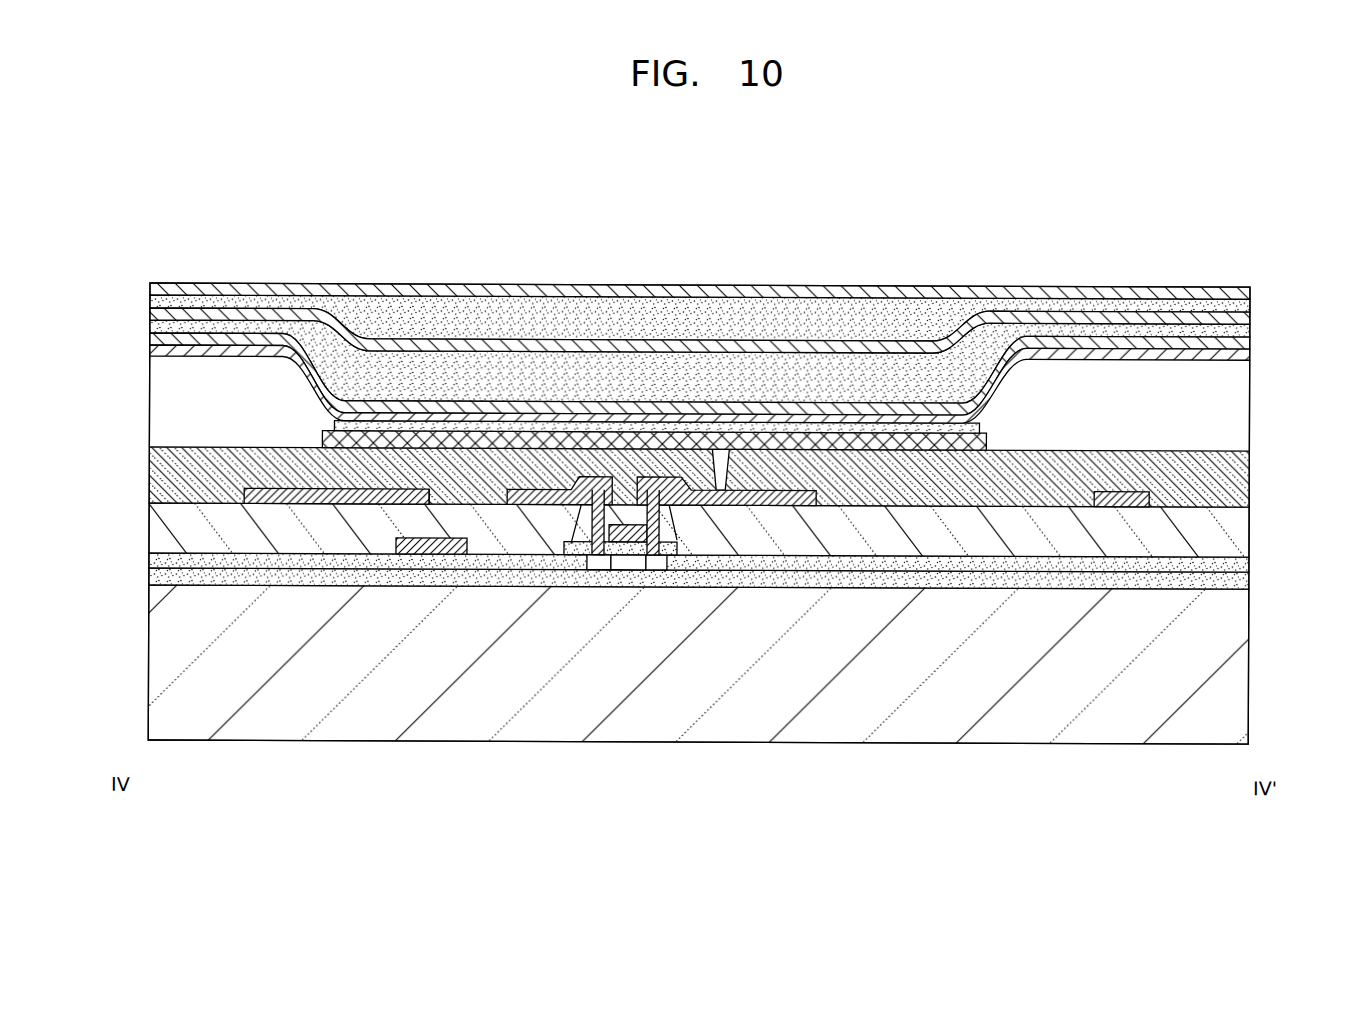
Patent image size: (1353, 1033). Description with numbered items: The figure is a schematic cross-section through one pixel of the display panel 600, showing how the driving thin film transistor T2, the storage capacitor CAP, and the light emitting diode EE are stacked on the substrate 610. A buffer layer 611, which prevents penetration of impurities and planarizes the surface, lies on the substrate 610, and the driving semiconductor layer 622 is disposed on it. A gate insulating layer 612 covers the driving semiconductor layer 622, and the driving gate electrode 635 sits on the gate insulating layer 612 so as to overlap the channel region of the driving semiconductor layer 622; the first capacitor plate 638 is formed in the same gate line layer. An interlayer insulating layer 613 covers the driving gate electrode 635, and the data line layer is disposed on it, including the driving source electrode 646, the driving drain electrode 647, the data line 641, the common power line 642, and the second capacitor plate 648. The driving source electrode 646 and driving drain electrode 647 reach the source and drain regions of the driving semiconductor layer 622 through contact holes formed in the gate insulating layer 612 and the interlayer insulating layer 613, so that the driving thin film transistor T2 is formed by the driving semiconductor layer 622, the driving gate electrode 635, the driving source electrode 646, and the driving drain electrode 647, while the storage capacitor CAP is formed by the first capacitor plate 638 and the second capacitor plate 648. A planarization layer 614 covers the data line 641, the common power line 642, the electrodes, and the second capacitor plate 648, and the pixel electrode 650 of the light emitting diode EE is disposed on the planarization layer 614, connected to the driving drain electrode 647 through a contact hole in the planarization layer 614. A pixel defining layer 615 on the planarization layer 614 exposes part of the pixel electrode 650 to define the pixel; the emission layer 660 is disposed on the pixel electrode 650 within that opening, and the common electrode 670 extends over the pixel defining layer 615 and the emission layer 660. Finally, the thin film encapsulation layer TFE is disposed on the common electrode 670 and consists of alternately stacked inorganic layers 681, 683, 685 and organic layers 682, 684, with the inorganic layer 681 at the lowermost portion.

The display panel 600 is at (1176, 247).
The substrate 610 is at (1250, 650).
The buffer layer 611 is at (984, 586).
The gate insulating layer 612 is at (877, 568).
The interlayer insulating layer 613 is at (1250, 528).
The planarization layer 614 is at (1250, 476).
The pixel defining layer 615 is at (150, 403).
The driving semiconductor layer 622 is at (628, 568).
The driving gate electrode 635 is at (663, 533).
The first capacitor plate 638 is at (415, 503).
The data line 641 is at (1120, 503).
The common power line 642 is at (275, 503).
The driving source electrode 646 is at (545, 503).
The driving drain electrode 647 is at (735, 503).
The second capacitor plate 648 is at (405, 553).
The pixel electrode 650 is at (430, 430).
The emission layer 660 is at (480, 420).
The common electrode 670 is at (537, 415).
The inorganic layer 681 is at (657, 403).
The organic layer 682 is at (712, 372).
The inorganic layer 683 is at (762, 345).
The organic layer 684 is at (818, 318).
The inorganic layer 685 is at (871, 290).
The light emitting diode EE is at (555, 216).
The thin film encapsulation layer TFE is at (890, 216).
The storage capacitor CAP is at (485, 807).
The driving thin film transistor T2 is at (755, 807).